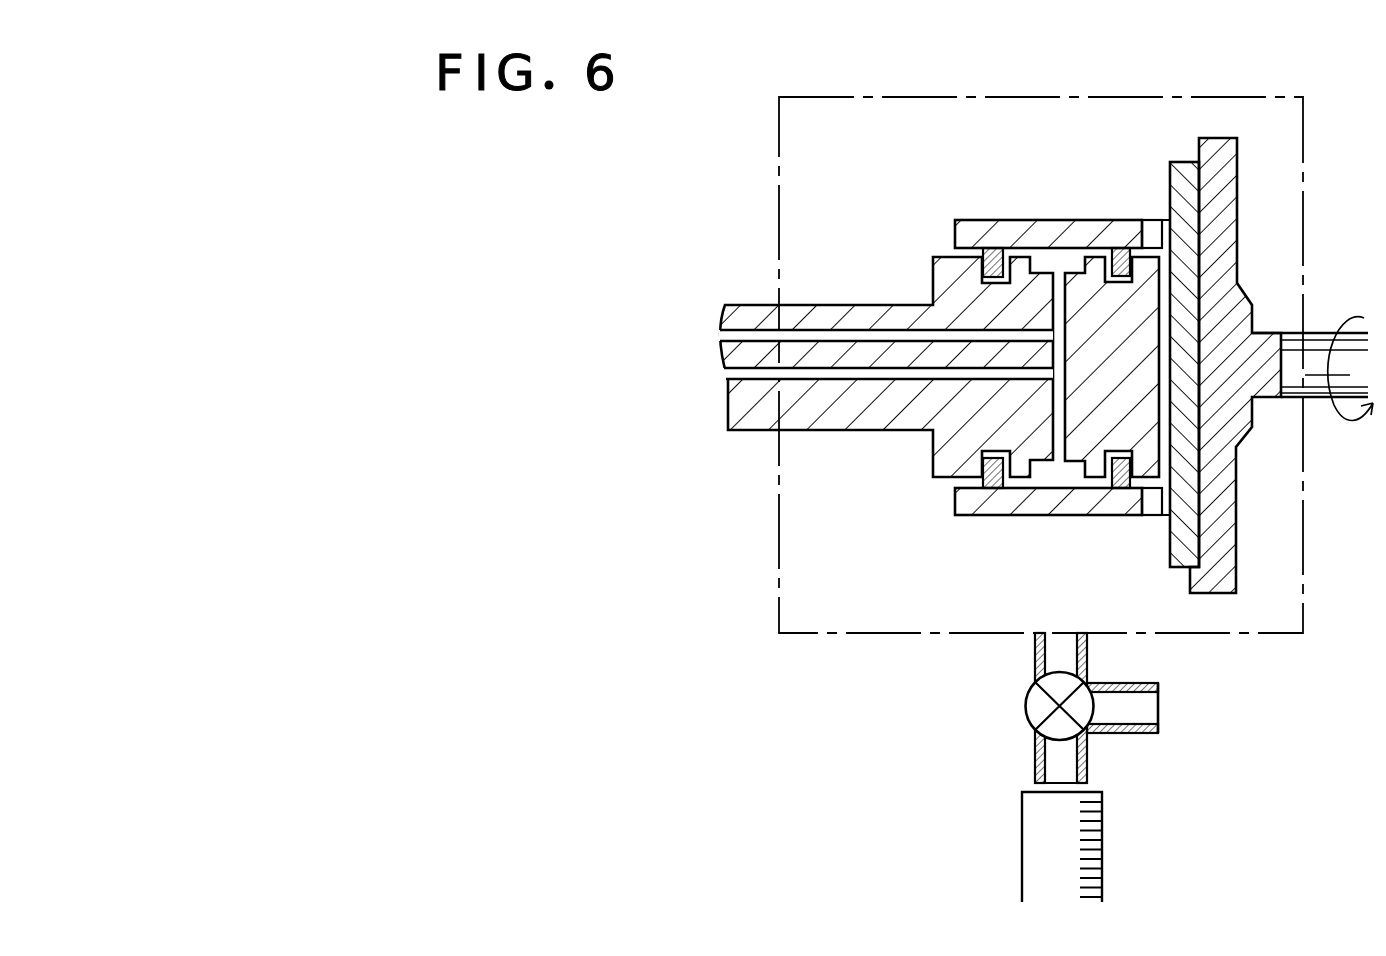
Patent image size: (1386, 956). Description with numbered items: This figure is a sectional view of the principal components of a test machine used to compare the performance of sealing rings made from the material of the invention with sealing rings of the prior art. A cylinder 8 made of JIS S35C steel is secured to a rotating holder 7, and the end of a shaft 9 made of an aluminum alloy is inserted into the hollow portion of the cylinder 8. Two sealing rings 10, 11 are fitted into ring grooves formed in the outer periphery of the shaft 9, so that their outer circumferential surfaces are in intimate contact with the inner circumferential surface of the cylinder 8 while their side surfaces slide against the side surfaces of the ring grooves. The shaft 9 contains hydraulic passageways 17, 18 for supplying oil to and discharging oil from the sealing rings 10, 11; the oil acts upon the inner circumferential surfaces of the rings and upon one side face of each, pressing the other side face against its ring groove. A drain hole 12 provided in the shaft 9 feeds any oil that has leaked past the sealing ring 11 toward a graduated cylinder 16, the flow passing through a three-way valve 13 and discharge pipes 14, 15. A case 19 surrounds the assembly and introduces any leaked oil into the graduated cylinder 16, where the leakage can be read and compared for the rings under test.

The rotating holder 7 is at (1220, 172).
The cylinder 8 is at (1188, 237).
The shaft 9 is at (750, 418).
The sealing ring 10 is at (993, 470).
The sealing ring 11 is at (1118, 472).
The drain hole 12 is at (1150, 503).
The three-way valve 13 is at (1025, 712).
The discharge pipe 14 is at (1160, 711).
The discharge pipe 15 is at (1090, 766).
The graduated cylinder 16 is at (1103, 855).
The hydraulic passageway 17 is at (563, 332).
The hydraulic passageway 18 is at (563, 374).
The case 19 is at (822, 637).